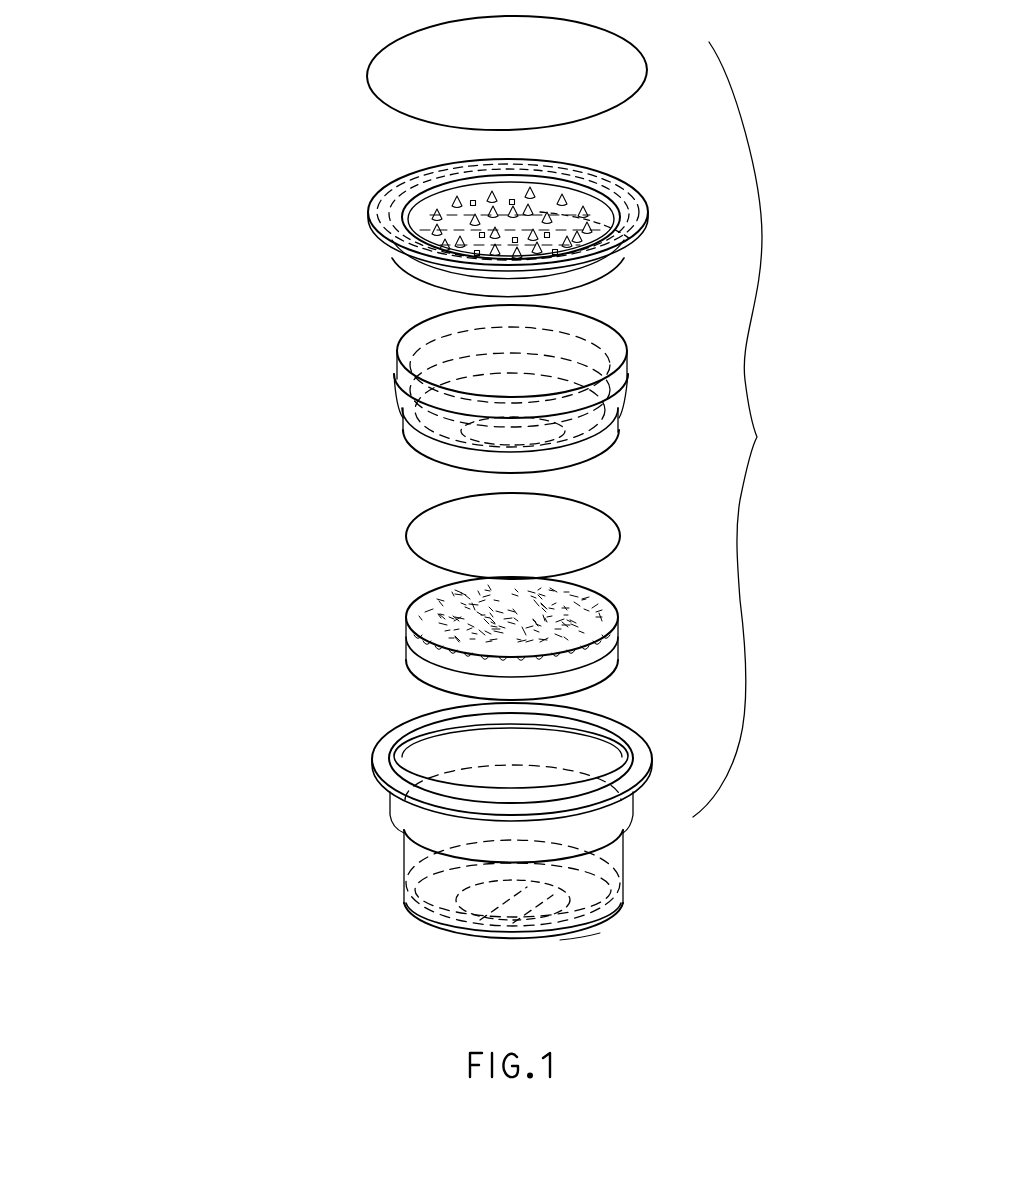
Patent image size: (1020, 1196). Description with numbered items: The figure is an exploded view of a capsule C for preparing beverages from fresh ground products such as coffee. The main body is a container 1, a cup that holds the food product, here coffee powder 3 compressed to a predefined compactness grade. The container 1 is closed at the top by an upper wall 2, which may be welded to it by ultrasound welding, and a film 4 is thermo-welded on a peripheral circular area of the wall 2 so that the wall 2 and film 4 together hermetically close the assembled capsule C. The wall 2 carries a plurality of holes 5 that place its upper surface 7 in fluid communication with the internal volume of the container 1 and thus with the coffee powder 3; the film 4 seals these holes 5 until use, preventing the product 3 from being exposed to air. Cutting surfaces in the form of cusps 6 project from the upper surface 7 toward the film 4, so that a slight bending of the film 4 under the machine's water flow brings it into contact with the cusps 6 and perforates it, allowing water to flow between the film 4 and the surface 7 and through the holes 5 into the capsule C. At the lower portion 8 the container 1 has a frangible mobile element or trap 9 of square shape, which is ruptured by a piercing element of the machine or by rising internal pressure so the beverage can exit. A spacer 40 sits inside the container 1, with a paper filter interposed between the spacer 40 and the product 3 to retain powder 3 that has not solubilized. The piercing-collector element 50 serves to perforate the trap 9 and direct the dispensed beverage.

The capsule C is at (742, 429).
The container 1 is at (442, 860).
The upper wall 2 is at (447, 200).
The coffee powder 3 is at (370, 397).
The film 4 is at (367, 75).
The holes 5 is at (550, 207).
The cusps 6 is at (453, 202).
The upper surface 7 is at (642, 197).
The lower portion 8 is at (583, 932).
The trap 9 is at (490, 898).
The spacer 40 is at (420, 645).
The piercing-collector element 50 is at (406, 530).